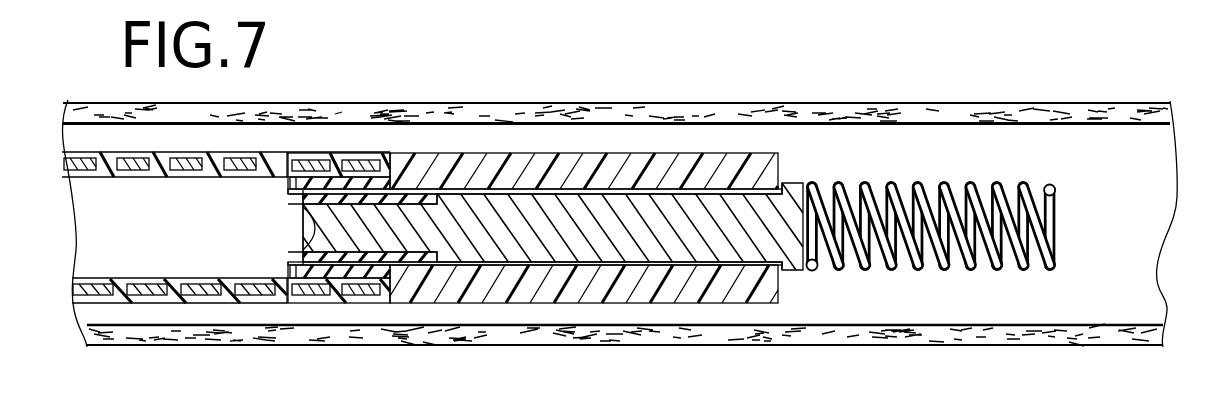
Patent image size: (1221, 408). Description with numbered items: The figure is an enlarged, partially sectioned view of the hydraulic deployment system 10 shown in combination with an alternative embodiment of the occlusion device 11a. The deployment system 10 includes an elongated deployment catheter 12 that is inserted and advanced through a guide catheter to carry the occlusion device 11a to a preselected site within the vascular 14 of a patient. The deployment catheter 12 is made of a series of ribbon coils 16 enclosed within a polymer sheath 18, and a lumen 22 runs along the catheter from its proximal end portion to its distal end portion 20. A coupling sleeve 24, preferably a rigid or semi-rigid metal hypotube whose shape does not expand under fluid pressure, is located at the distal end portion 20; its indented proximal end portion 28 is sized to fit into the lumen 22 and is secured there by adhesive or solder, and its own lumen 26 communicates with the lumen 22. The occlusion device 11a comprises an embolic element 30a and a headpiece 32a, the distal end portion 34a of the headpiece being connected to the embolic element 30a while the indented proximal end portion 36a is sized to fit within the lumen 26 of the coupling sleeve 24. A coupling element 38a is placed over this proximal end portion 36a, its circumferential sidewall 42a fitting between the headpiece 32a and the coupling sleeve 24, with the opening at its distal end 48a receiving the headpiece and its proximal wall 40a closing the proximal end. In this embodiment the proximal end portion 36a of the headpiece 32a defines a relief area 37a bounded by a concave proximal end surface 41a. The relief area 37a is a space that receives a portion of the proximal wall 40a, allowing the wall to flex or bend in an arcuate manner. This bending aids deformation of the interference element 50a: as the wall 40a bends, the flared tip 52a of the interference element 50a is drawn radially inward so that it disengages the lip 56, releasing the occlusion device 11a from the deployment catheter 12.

The deployment system 10 is at (108, 148).
The occlusion device 11a is at (836, 160).
The deployment catheter 12 is at (230, 158).
The vascular 14 is at (568, 113).
The ribbon coils 16 is at (171, 280).
The polymer sheath 18 is at (118, 296).
The distal end portion 20 is at (328, 295).
The lumen 22 is at (220, 274).
The coupling sleeve 24 is at (612, 158).
The lumen 26 is at (682, 191).
The indented proximal end portion 28 is at (348, 176).
The coil spring 30a is at (972, 197).
The headpiece 32a is at (655, 243).
The core end 34a is at (773, 238).
The proximal end portion 36a is at (403, 222).
The relief area 37a is at (302, 231).
The coupling element 38a is at (312, 186).
The proximal wall 40a is at (308, 228).
The concave proximal end surface 41a is at (302, 192).
The lower strip 42a is at (403, 259).
The upper strip 48a is at (434, 194).
The interference element 50a is at (290, 207).
The flared tip 52a is at (290, 185).
The lip 56 is at (293, 185).